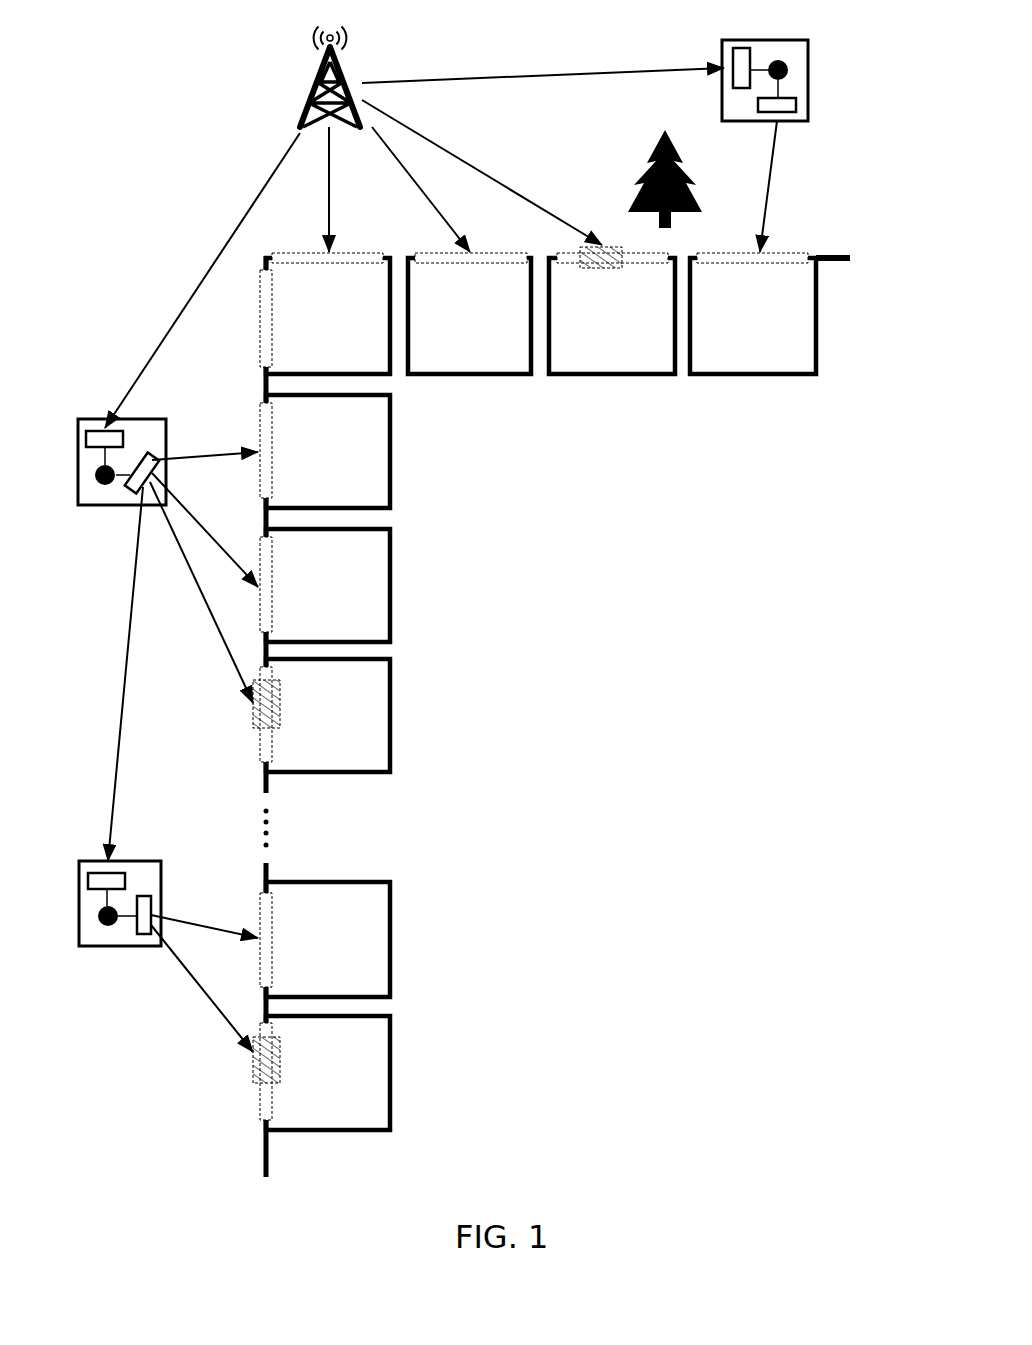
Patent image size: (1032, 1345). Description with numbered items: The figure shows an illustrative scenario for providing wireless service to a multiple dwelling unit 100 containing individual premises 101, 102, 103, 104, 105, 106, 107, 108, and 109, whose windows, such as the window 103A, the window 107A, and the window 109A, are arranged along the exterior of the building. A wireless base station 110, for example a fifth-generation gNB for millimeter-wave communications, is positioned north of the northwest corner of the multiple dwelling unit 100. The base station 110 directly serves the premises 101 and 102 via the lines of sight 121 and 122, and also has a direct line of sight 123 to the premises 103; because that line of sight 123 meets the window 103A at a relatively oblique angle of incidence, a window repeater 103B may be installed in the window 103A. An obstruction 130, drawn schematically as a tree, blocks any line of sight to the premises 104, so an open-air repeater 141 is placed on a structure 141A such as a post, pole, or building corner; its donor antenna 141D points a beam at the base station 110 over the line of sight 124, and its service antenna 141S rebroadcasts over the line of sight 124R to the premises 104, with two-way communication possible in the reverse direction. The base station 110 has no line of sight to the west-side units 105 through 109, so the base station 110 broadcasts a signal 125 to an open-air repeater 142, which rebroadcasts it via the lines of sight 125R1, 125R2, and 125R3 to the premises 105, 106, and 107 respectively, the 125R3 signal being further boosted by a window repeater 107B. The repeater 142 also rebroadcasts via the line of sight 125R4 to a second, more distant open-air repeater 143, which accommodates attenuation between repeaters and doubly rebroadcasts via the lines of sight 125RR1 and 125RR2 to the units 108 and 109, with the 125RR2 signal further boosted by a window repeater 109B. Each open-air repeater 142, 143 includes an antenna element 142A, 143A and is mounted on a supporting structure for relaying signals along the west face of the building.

The multiple dwelling unit 100 is at (828, 251).
The premises 101 is at (325, 313).
The premises 102 is at (469, 313).
The premises 103 is at (612, 310).
The window 103A is at (646, 262).
The window repeater 103B is at (607, 270).
The premises 104 is at (753, 313).
The premises 105 is at (325, 451).
The premises 106 is at (325, 585).
The premises 107 is at (321, 715).
The window 107A is at (268, 745).
The window repeater 107B is at (280, 692).
The premises 108 is at (325, 939).
The premises 109 is at (321, 1073).
The window 109A is at (268, 1102).
The window repeater 109B is at (280, 1048).
The wireless base station 110 is at (313, 64).
The line of sight 121 is at (350, 189).
The line of sight 122 is at (422, 189).
The line of sight 123 is at (482, 172).
The line of sight 124 is at (543, 66).
The line of sight 124R is at (794, 186).
The signal 125 is at (202, 280).
The line of sight 125R1 is at (205, 444).
The line of sight 125R2 is at (205, 530).
The line of sight 125R3 is at (201, 592).
The line of sight 125R4 is at (146, 674).
The line of sight 125RR1 is at (204, 919).
The line of sight 125RR2 is at (187, 988).
The obstruction 130 is at (654, 150).
The open-air repeater 141 is at (771, 68).
The structure 141A is at (790, 70).
The donor antenna 141D is at (738, 47).
The service antenna 141S is at (797, 105).
The open-air repeater 142 is at (99, 463).
The antenna 142A is at (105, 492).
The open-air repeater 143 is at (99, 903).
The antenna 143A is at (108, 933).